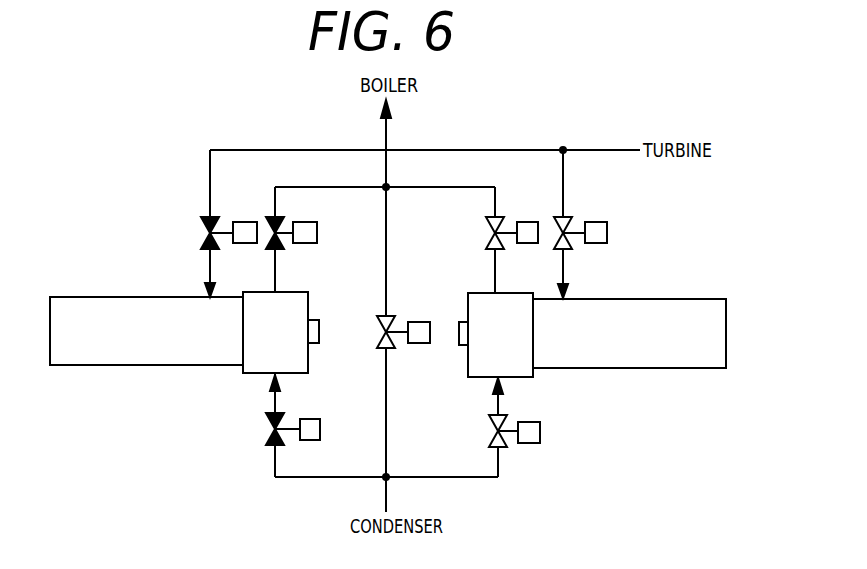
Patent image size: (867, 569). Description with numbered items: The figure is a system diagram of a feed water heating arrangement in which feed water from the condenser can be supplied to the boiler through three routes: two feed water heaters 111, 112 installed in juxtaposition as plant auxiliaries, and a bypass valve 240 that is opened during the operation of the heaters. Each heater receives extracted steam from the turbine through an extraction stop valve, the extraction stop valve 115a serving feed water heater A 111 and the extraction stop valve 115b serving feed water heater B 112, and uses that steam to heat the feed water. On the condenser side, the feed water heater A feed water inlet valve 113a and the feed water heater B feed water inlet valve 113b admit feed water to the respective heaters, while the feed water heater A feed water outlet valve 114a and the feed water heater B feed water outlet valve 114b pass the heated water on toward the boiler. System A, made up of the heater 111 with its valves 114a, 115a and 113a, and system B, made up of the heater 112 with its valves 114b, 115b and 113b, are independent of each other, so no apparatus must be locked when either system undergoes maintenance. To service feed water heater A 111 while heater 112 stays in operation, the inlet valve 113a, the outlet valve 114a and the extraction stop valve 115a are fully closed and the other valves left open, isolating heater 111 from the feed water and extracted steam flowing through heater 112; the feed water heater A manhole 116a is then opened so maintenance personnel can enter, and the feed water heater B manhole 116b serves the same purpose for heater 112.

The feed water heater A 111 is at (130, 297).
The feed water heater B 112 is at (640, 299).
The feed water heater A feed water inlet valve 113a is at (266, 429).
The feed water heater B feed water inlet valve 113b is at (542, 432).
The feed water heater A feed water outlet valve 114a is at (269, 227).
The feed water heater B feed water outlet valve 114b is at (488, 233).
The feed water heater A extraction stop valve 115a is at (202, 232).
The feed water heater B extraction stop valve 115b is at (608, 233).
The feed water heater A manhole 116a is at (320, 331).
The feed water heater B manhole 116b is at (459, 334).
The bypass valve 240 is at (418, 318).